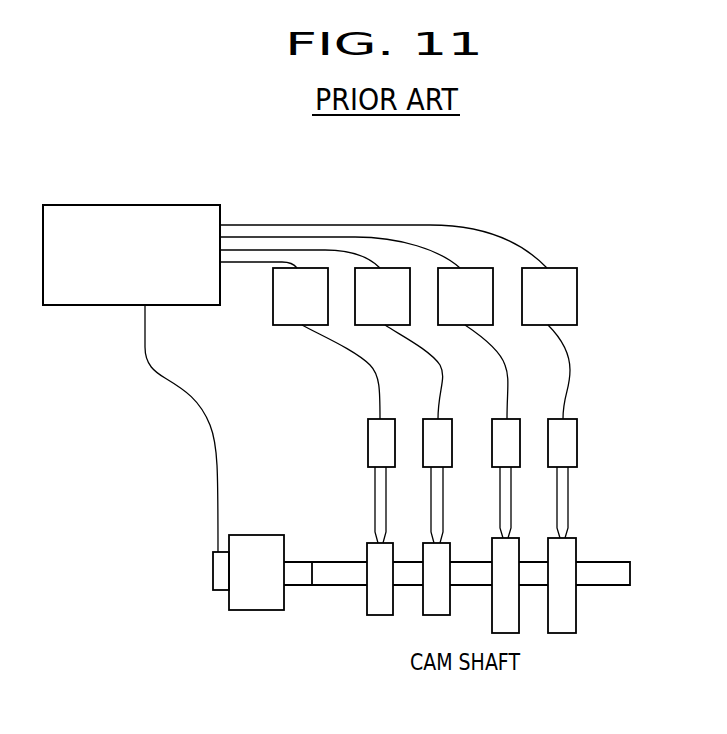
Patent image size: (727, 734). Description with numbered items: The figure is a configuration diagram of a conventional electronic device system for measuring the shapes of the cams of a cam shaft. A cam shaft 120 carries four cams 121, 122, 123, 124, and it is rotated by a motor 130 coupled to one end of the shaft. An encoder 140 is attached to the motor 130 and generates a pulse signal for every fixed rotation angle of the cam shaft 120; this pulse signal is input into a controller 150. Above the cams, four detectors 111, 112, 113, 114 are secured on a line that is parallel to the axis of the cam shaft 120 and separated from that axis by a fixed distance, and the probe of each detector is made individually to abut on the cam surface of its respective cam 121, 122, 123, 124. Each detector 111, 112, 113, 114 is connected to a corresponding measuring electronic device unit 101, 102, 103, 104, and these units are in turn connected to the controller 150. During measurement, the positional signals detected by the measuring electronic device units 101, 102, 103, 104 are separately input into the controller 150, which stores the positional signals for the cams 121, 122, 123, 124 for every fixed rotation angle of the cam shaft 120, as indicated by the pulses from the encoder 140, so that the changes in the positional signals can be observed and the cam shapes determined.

The controller 150 is at (136, 204).
The measuring electronic device unit 101 is at (300, 296).
The measuring electronic device unit 102 is at (382, 296).
The measuring electronic device unit 103 is at (465, 296).
The measuring electronic device unit 104 is at (549, 296).
The detector 111 is at (368, 443).
The detector 112 is at (423, 437).
The detector 113 is at (492, 437).
The detector 114 is at (577, 435).
The cam shaft 120 is at (607, 577).
The cam 121 is at (373, 540).
The cam 122 is at (430, 542).
The cam 123 is at (495, 540).
The cam 124 is at (572, 538).
The motor 130 is at (260, 602).
The encoder 140 is at (220, 590).